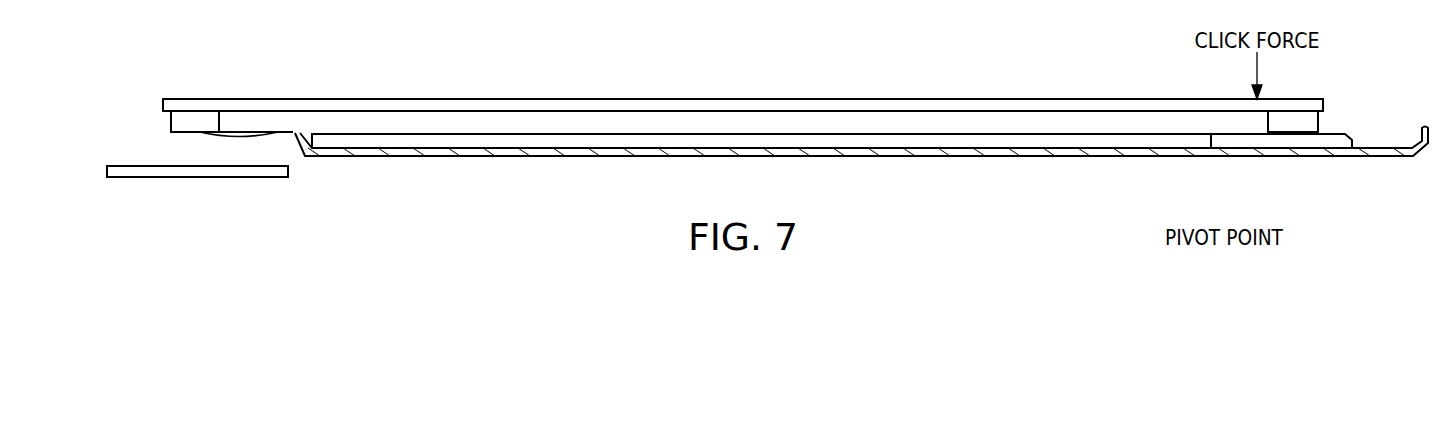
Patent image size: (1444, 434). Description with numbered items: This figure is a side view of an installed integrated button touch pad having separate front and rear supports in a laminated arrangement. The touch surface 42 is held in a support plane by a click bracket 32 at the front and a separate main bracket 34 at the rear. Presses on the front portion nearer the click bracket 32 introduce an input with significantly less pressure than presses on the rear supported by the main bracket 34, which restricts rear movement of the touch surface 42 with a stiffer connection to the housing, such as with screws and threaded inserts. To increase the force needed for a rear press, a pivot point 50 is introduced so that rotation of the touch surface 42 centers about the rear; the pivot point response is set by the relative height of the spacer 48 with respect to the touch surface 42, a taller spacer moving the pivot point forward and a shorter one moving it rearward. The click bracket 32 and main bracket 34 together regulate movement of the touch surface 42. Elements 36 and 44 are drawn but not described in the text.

The click bracket 32 is at (202, 173).
The main bracket 34 is at (1033, 150).
The dome switch 36 is at (240, 138).
The touch surface 42 is at (171, 121).
The key cap / top plate 44 is at (743, 99).
The spacer 48 is at (612, 142).
The pivot point 50 is at (1211, 157).